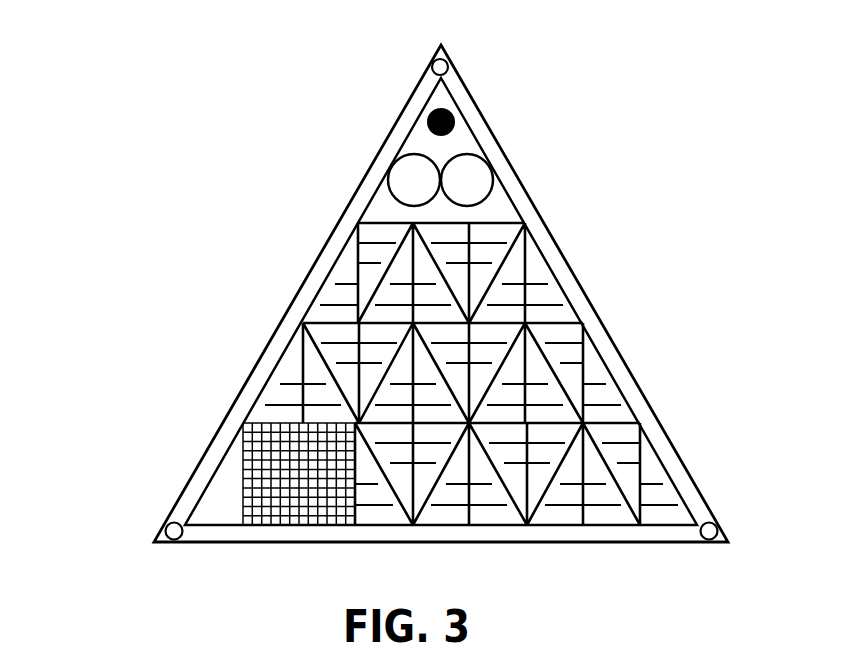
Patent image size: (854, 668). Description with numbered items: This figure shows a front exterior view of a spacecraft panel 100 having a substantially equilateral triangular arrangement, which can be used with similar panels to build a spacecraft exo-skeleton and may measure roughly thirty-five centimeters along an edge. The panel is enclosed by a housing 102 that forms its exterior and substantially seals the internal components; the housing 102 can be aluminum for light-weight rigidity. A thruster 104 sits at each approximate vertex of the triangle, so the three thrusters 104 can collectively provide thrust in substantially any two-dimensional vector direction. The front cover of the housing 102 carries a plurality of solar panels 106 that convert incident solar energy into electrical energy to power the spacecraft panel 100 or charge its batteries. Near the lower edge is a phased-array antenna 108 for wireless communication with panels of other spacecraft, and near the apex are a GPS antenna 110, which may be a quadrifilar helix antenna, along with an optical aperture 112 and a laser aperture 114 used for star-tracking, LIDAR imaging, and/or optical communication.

The spacecraft panel 100 is at (102, 42).
The housing 102 is at (352, 200).
The thruster 104 is at (432, 60).
The solar panels 106 is at (348, 258).
The phased-array antenna 108 is at (298, 525).
The GPS antenna 110 is at (428, 117).
The optical aperture 112 is at (391, 168).
The laser aperture 114 is at (492, 170).